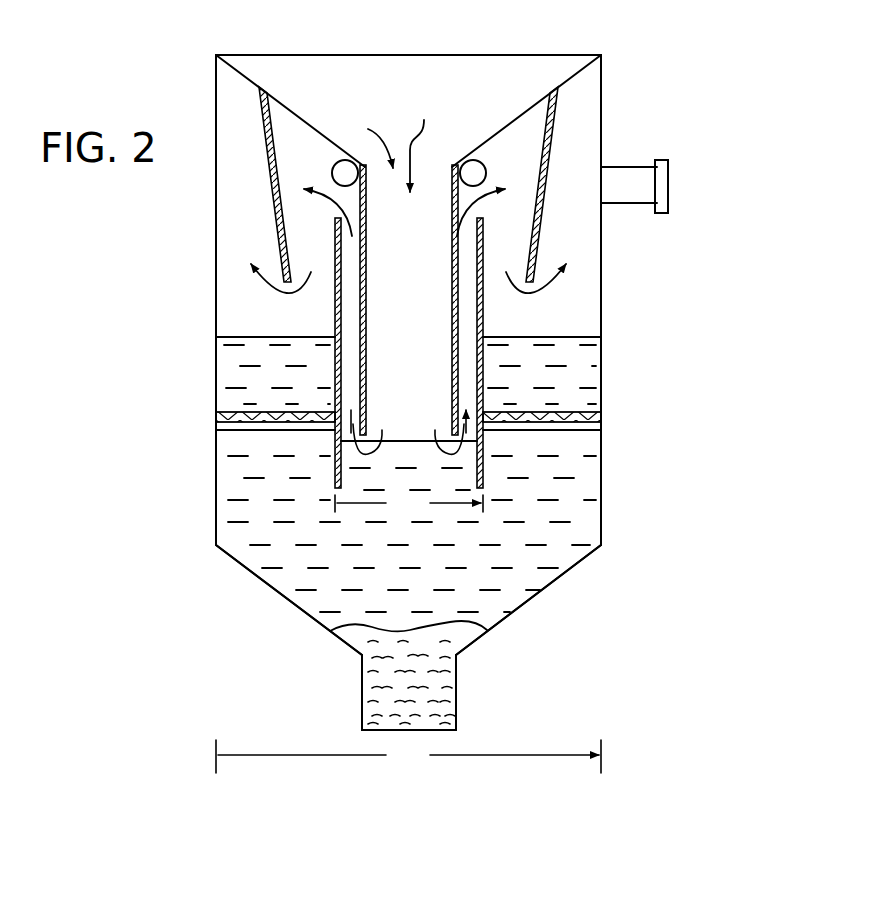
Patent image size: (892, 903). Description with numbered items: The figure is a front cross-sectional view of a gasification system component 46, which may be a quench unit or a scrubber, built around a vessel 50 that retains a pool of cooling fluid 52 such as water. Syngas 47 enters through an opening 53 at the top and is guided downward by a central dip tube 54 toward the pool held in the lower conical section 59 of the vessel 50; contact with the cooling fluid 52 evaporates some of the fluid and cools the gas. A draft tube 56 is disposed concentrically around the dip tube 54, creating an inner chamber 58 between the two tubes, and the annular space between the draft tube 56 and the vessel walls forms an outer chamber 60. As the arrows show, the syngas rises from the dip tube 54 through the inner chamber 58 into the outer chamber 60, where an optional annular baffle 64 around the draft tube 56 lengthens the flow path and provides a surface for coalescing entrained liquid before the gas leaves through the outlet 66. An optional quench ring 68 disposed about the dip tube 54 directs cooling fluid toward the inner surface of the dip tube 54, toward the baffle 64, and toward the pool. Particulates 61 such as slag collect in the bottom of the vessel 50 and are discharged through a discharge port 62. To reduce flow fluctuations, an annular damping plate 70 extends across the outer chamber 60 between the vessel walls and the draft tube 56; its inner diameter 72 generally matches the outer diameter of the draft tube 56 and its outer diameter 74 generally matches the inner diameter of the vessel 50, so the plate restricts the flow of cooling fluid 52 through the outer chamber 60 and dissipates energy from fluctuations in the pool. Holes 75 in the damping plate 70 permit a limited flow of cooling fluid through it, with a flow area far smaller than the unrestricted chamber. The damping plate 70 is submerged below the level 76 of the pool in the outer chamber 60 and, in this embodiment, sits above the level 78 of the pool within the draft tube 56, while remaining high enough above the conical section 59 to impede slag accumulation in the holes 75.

The gasification system component 46 is at (640, 27).
The syngas 47 is at (426, 142).
The vessel 50 is at (602, 270).
The cooling fluid 52 is at (240, 507).
The opening 53 is at (366, 139).
The dip tube 54 is at (360, 348).
The draft tube 56 is at (335, 302).
The inner chamber 58 is at (467, 293).
The conical section 59 is at (541, 598).
The outer chamber 60 is at (588, 312).
The particulates 61 is at (363, 688).
The discharge port 62 is at (457, 688).
The annular baffle 64 is at (550, 148).
The outlet 66 is at (659, 160).
The quench ring 68 is at (486, 160).
The damping plate 70 is at (216, 414).
The inner diameter 72 is at (409, 504).
The outer diameter 74 is at (408, 756).
The holes 75 is at (272, 417).
The level 76 is at (216, 337).
The level 78 is at (420, 441).